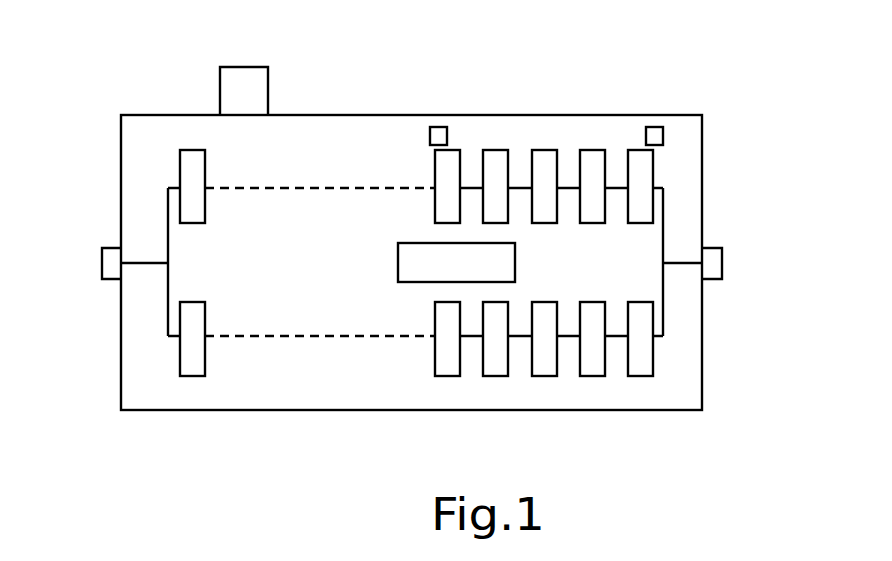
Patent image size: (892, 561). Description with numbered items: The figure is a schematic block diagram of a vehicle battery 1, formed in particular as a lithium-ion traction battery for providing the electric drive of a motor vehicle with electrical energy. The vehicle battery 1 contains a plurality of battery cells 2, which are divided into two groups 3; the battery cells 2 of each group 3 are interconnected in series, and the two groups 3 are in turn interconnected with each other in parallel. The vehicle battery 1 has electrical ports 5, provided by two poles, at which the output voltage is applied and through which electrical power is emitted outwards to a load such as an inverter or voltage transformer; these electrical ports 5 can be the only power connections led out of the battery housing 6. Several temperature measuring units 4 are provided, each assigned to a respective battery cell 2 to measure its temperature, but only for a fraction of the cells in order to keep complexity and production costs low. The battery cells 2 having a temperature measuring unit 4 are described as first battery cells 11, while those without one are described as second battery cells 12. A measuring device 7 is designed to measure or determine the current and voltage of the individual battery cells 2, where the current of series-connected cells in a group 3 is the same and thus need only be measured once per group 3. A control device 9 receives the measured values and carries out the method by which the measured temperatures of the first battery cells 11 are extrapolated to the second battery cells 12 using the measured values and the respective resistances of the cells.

The vehicle battery 1 is at (144, 436).
The battery cells 2 is at (497, 368).
The groups 3 is at (666, 177).
The temperature measuring units 4 is at (432, 127).
The electrical ports 5 is at (106, 262).
The battery housing 6 is at (276, 410).
The measuring device 7 is at (398, 268).
The control device 9 is at (247, 92).
The first battery cells 11 is at (455, 162).
The second battery cells 12 is at (590, 162).